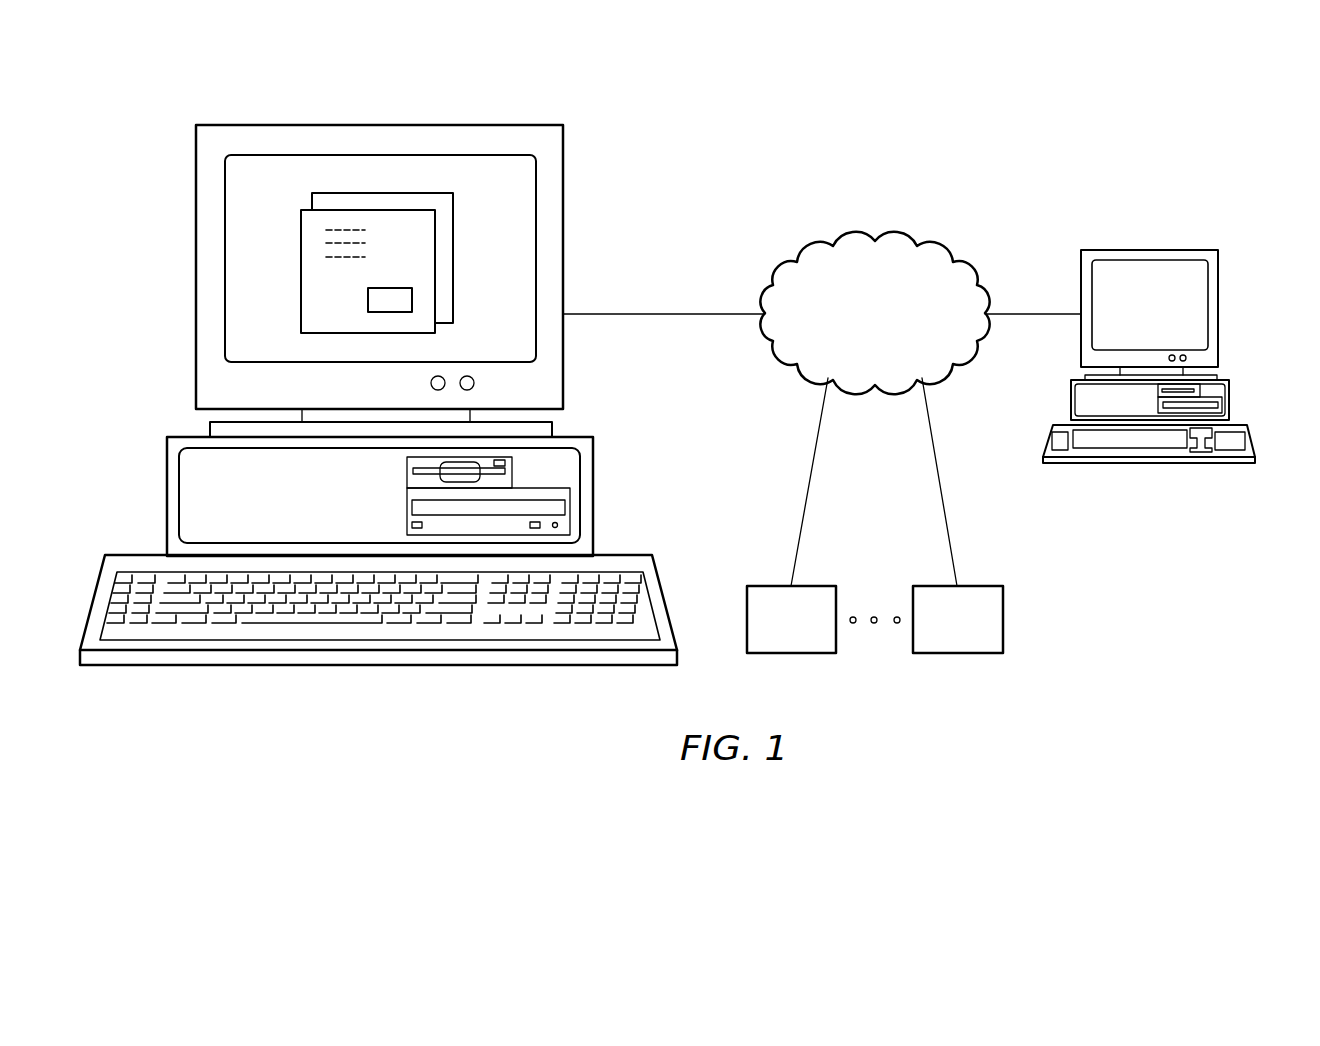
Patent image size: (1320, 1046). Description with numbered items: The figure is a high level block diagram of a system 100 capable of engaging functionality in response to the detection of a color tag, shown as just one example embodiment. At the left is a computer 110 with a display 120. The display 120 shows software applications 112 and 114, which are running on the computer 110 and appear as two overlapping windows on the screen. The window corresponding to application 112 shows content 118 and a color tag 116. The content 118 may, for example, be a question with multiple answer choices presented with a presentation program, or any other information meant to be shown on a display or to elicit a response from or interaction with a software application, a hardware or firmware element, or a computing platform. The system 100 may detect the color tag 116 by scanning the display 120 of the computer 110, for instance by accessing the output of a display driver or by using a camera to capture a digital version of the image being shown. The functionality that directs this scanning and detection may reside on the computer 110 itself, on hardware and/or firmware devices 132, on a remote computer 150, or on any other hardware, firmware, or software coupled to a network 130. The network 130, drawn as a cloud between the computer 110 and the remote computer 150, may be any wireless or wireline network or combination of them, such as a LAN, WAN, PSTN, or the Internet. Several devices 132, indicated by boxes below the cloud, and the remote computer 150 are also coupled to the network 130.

The system 100 is at (1072, 105).
The computer 110 is at (196, 268).
The software application 112 is at (301, 270).
The software application 114 is at (453, 257).
The color tag 116 is at (388, 287).
The content 118 is at (346, 260).
The display 120 is at (280, 194).
The network 130 is at (894, 328).
The hardware and/or firmware devices 132 is at (790, 653).
The remote computer 150 is at (1218, 307).